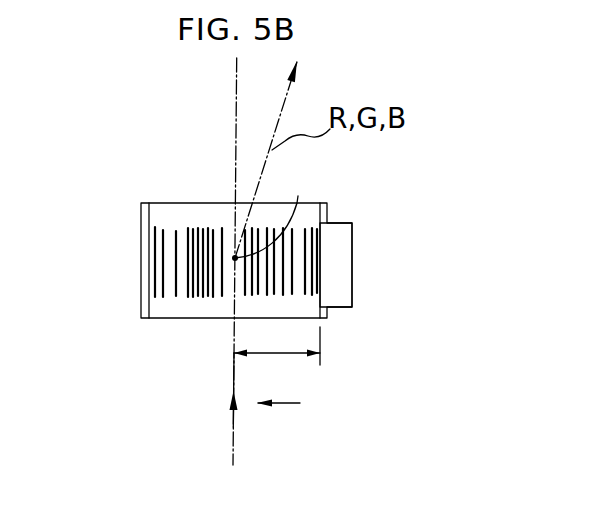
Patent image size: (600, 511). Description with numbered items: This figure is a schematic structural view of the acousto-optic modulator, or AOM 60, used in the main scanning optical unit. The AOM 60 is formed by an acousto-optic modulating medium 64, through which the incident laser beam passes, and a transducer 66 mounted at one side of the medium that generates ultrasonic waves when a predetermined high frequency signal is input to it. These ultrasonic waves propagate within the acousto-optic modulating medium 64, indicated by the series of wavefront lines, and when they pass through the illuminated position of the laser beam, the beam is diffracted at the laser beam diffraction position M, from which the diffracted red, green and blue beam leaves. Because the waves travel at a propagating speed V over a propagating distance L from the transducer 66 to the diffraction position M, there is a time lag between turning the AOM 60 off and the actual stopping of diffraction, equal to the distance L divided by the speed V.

The acousto-optic modulator (AOM) 60 is at (391, 215).
The acousto-optic modulating medium 64 is at (167, 312).
The transducer 66 is at (340, 283).
The laser beam diffraction position M is at (274, 212).
The propagating distance L is at (276, 354).
The propagating speed V is at (279, 404).